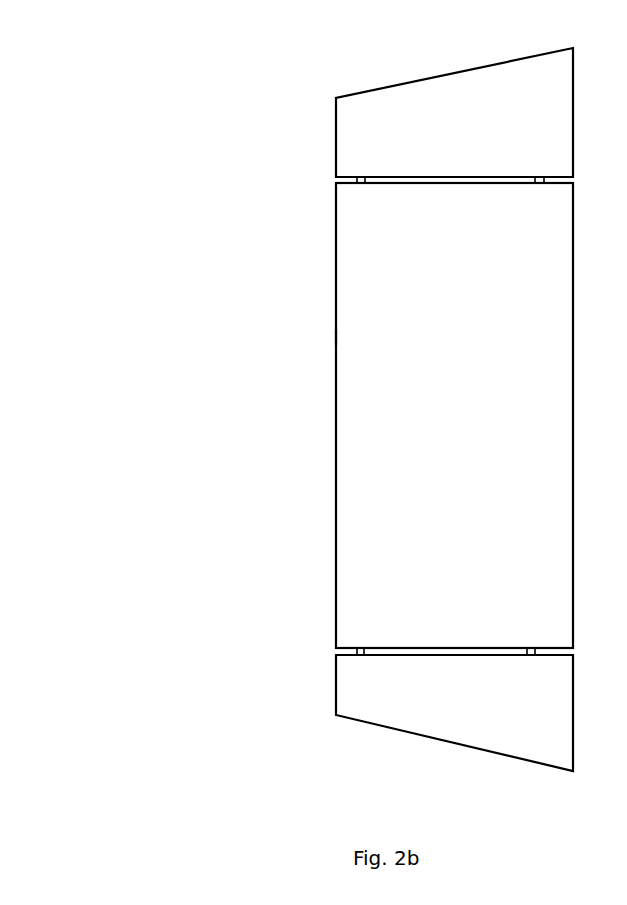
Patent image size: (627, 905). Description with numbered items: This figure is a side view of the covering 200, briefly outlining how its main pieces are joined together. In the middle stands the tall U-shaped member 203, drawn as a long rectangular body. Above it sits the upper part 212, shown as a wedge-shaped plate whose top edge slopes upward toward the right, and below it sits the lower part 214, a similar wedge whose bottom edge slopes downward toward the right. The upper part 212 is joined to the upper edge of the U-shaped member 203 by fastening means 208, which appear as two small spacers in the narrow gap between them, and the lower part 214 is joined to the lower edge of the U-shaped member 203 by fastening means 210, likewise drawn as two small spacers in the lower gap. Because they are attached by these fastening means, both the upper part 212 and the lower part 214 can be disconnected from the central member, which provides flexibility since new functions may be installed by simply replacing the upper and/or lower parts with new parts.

The optical device 200 is at (318, 319).
The U-shaped member 203 is at (322, 491).
The fastening means 208 is at (541, 188).
The fastening means 210 is at (523, 643).
The upper part 212 is at (325, 116).
The lower part 214 is at (352, 698).